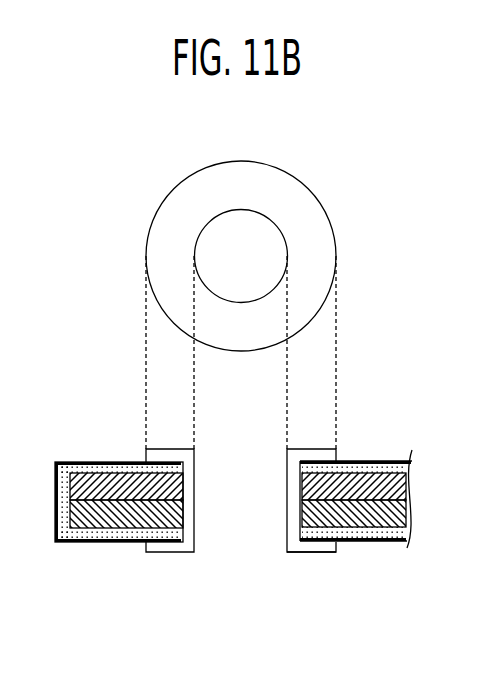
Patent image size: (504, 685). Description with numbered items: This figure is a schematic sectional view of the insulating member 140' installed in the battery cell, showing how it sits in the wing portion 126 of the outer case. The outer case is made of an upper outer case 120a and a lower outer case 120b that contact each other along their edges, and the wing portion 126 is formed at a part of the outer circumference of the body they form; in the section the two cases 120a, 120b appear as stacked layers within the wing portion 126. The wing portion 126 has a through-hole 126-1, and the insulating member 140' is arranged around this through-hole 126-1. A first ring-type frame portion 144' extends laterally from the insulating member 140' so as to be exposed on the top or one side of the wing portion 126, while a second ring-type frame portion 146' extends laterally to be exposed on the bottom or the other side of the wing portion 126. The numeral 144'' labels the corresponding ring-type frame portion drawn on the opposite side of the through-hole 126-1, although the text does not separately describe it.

The insulating member 140' is at (259, 232).
The first ring-type frame portion 144' is at (273, 381).
The second guide band 144'' is at (311, 404).
The second ring-type frame portion 146' is at (311, 590).
The wing portion 126 is at (360, 557).
The through-hole 126-1 is at (242, 519).
The upper outer case 120a is at (402, 483).
The lower outer case 120b is at (400, 513).